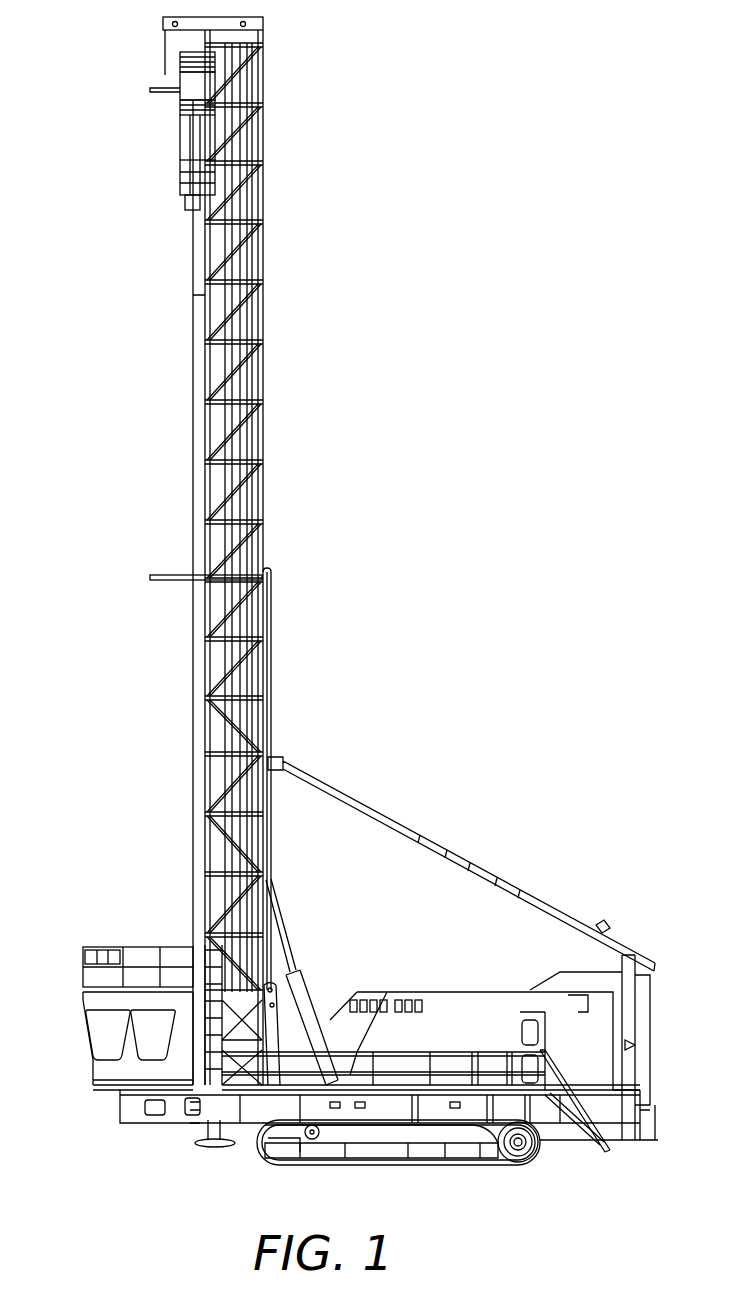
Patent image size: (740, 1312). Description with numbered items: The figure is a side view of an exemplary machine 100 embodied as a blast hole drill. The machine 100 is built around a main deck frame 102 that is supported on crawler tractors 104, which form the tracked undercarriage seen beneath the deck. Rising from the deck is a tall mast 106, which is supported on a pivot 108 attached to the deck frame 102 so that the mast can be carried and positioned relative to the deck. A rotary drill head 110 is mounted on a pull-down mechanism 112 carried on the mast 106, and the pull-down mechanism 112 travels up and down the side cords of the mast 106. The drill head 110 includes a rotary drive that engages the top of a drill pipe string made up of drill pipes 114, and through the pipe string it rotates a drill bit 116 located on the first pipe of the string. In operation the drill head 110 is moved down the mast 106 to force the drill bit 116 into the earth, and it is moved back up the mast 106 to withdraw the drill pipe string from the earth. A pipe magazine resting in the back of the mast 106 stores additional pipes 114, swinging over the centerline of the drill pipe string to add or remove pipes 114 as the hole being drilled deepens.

The machine 100 is at (423, 100).
The main deck frame 102 is at (120, 1107).
The crawler tractors 104 is at (378, 1145).
The mast 106 is at (265, 541).
The pivot 108 is at (296, 979).
The rotary drill head 110 is at (180, 183).
The pull-down mechanism 112 is at (178, 83).
The drill pipes 114 is at (193, 541).
The drill bit 116 is at (190, 1112).